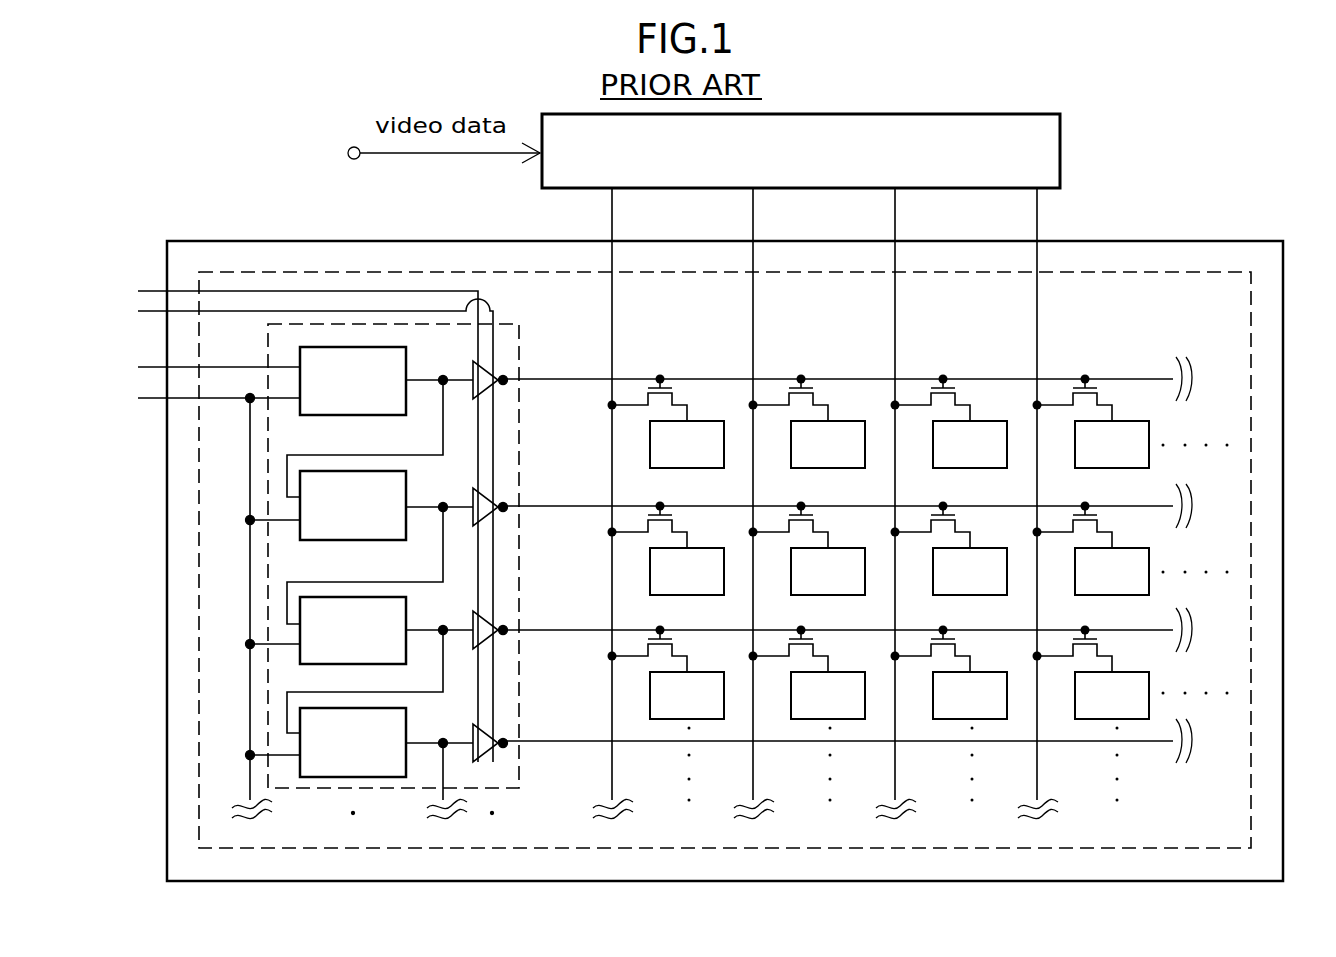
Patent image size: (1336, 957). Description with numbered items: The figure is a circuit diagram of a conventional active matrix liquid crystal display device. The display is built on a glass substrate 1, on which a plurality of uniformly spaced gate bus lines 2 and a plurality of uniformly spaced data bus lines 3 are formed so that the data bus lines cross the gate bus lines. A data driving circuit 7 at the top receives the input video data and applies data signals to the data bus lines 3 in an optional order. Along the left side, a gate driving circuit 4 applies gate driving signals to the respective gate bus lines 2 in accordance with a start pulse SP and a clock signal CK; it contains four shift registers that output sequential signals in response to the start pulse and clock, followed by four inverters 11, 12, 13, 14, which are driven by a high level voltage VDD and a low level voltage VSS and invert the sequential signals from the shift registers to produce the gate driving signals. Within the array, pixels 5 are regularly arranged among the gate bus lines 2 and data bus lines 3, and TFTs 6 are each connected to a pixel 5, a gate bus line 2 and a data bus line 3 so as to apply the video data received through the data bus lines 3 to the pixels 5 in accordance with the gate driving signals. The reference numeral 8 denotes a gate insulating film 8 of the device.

The glass substrate 1 is at (1212, 255).
The gate bus lines 2 is at (1130, 379).
The data bus lines 3 is at (605, 293).
The gate driving circuit 4 is at (302, 507).
The pixels 5 is at (703, 450).
The TFTs 6 is at (680, 392).
The data driving circuit 7 is at (1028, 150).
The gate insulating film 8 is at (1228, 822).
The inverter 11 is at (476, 397).
The inverter 12 is at (476, 524).
The inverter 13 is at (476, 647).
The inverter 14 is at (488, 757).